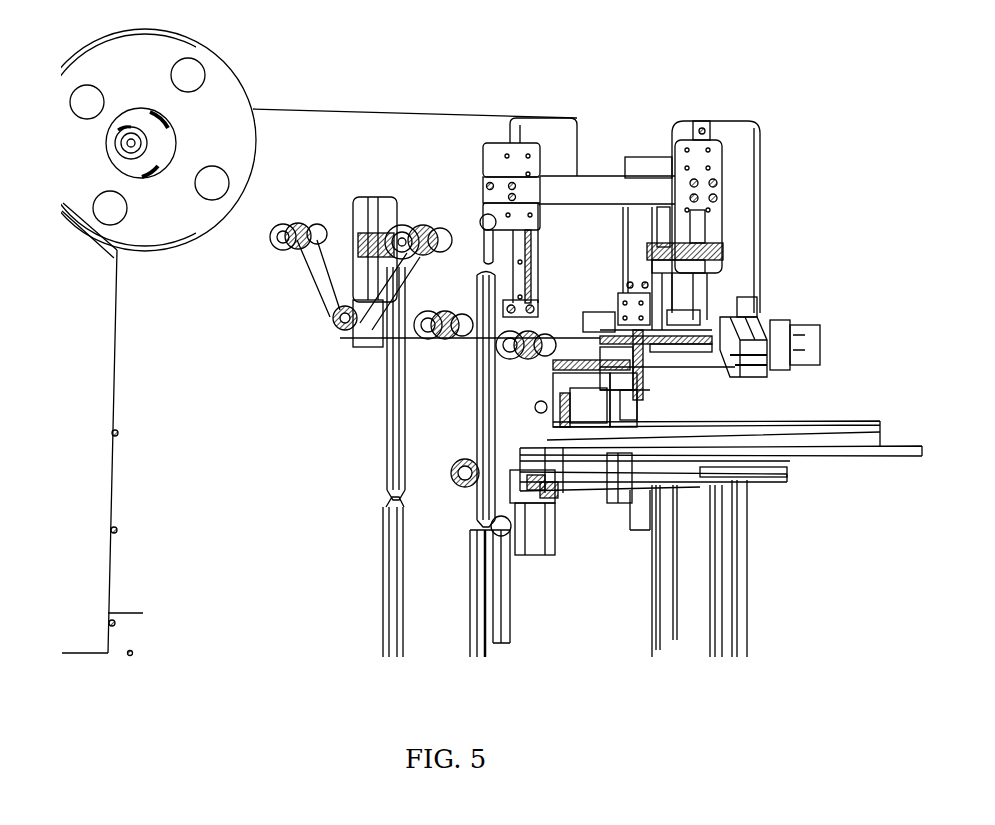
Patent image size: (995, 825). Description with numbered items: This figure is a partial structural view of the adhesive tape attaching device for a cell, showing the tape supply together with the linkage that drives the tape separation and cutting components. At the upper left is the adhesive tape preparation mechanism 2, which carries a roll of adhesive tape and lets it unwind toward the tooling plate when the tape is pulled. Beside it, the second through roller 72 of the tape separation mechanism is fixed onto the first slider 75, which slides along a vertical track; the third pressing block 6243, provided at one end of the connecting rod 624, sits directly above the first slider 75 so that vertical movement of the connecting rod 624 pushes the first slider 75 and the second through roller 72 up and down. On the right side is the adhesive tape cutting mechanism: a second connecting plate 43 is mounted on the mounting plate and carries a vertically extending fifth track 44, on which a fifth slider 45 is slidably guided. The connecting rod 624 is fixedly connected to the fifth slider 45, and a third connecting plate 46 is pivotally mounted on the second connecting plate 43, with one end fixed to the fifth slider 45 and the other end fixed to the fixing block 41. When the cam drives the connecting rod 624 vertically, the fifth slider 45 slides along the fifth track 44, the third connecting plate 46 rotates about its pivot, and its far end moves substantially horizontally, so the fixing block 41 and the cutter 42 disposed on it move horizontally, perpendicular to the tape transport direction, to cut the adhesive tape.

The adhesive tape preparation mechanism 2 is at (187, 120).
The third pressing block 6243 is at (373, 230).
The connecting rod 624 is at (483, 198).
The second through roller 72 is at (336, 322).
The first slider 75 is at (483, 197).
The cutter 42 is at (647, 357).
The fixing block 41 is at (595, 378).
The third connecting plate 46 is at (562, 467).
The fifth track 44 is at (538, 477).
The second connecting plate 43 is at (556, 540).
The fifth slider 45 is at (528, 549).